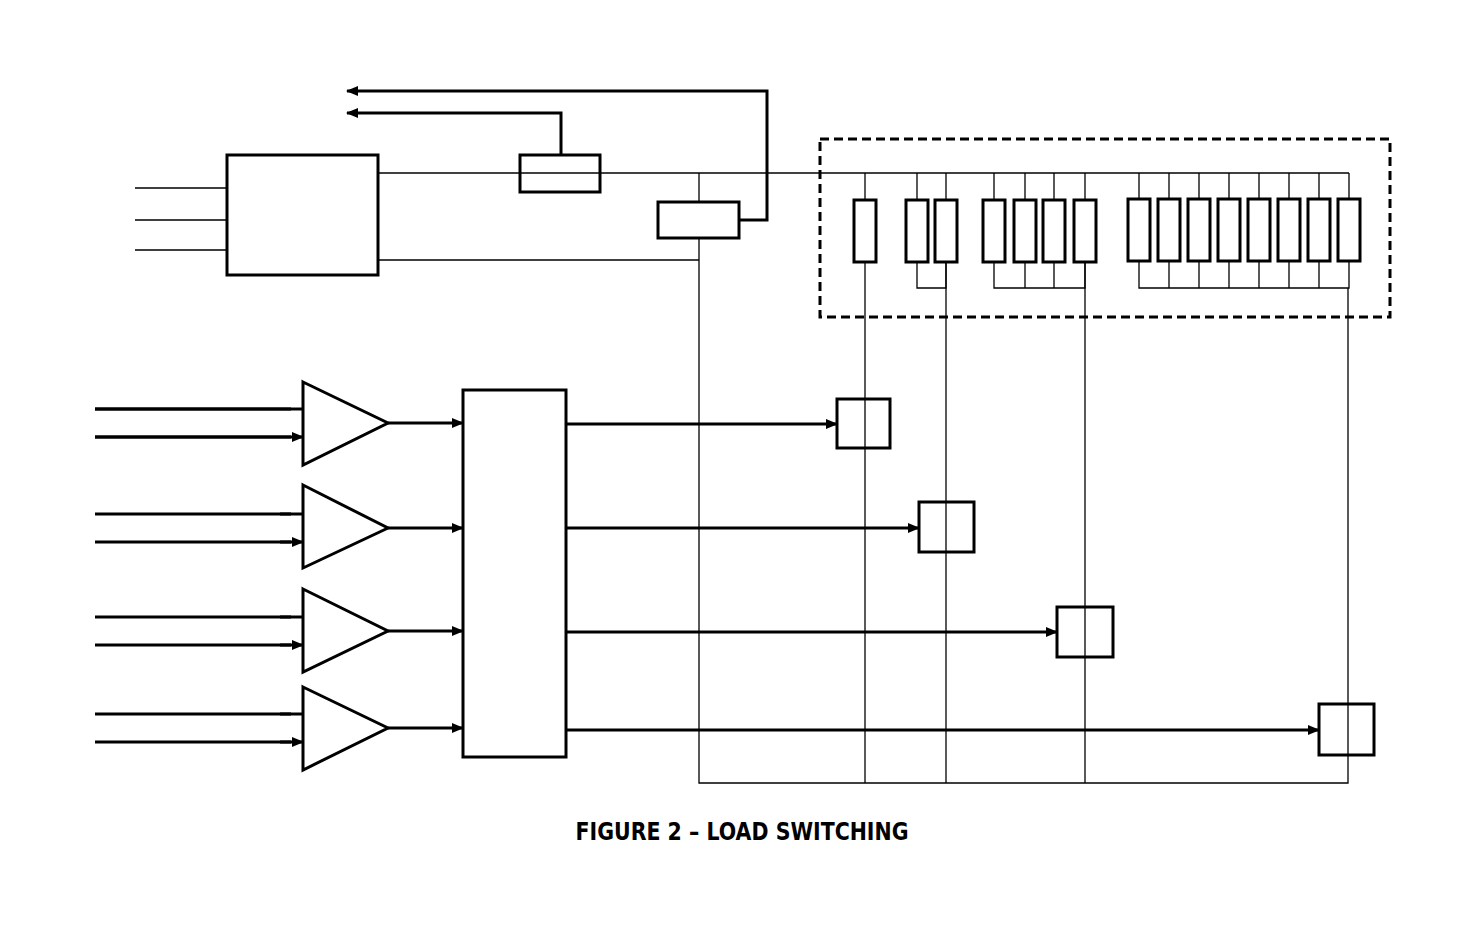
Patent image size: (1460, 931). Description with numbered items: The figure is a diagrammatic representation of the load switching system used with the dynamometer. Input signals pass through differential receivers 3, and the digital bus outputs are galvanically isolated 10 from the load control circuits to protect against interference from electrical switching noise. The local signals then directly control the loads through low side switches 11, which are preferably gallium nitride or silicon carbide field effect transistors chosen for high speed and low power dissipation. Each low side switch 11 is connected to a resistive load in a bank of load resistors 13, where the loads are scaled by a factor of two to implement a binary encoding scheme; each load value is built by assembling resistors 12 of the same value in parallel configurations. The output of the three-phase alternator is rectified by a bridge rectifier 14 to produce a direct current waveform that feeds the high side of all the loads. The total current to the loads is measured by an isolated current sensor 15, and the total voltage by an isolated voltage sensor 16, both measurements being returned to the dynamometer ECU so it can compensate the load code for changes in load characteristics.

The differential receiver 3 is at (347, 423).
The galvanic isolation 10 is at (510, 548).
The low side switch 11 is at (866, 420).
The resistor 12 is at (1362, 232).
The bank of load resistors 13 is at (1133, 246).
The bridge rectifier 14 is at (303, 225).
The isolated current sensor 15 is at (556, 173).
The isolated voltage sensor 16 is at (698, 218).